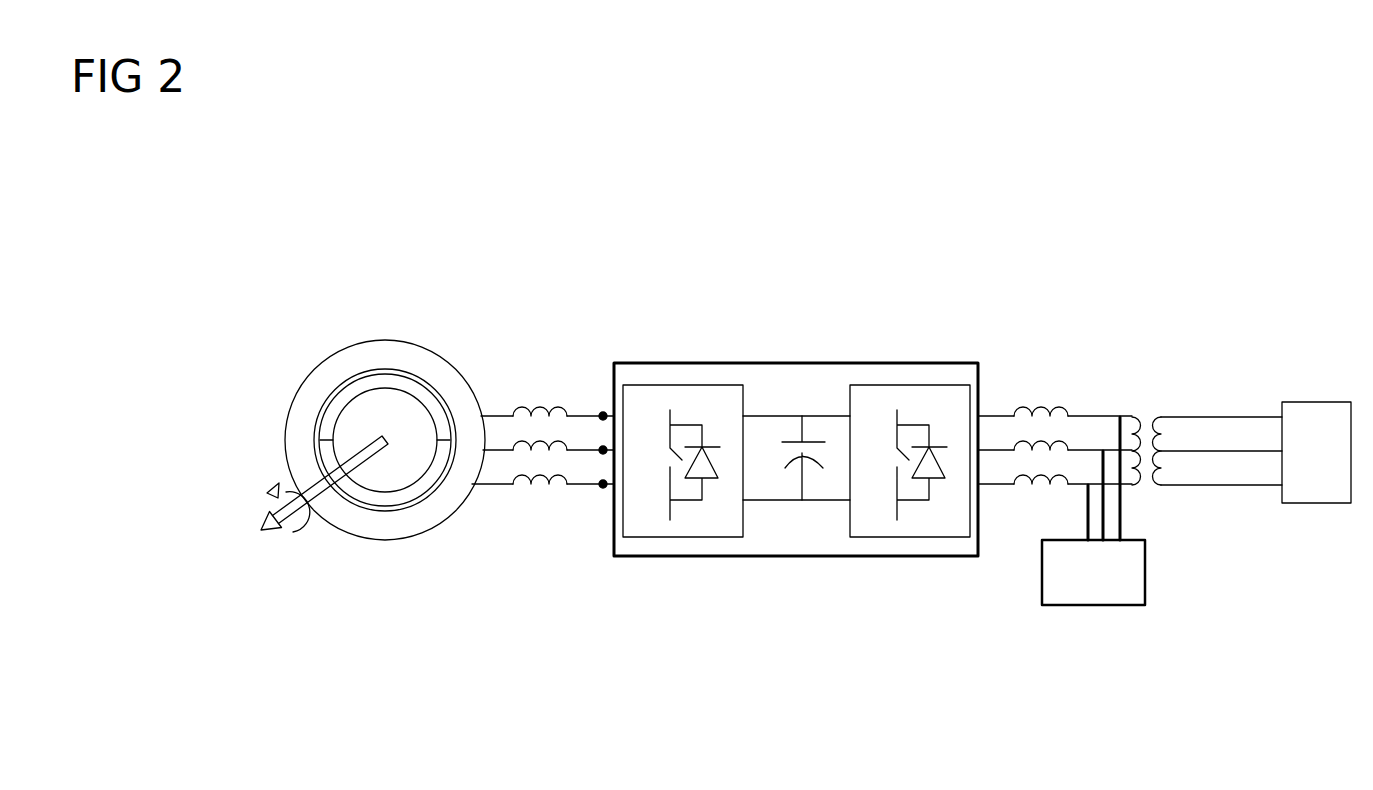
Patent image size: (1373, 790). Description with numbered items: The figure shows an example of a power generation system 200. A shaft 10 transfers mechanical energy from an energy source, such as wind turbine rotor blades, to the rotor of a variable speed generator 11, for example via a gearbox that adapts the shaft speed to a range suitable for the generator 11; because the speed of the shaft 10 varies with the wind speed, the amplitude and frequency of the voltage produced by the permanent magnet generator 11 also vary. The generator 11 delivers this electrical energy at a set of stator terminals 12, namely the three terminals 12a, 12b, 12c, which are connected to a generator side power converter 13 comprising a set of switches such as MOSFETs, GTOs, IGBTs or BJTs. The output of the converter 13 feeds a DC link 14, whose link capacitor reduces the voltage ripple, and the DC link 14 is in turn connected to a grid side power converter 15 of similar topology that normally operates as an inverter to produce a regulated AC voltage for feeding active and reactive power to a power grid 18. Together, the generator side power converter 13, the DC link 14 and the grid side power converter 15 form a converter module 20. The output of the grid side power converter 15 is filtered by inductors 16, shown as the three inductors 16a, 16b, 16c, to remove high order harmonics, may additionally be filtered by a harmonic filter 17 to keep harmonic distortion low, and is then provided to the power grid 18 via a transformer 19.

The shaft 10 is at (270, 535).
The variable speed generator 11 is at (316, 362).
The stator terminals 12 is at (602, 482).
The stator terminal 12a is at (540, 411).
The stator terminal 12b is at (540, 445).
The stator terminal 12c is at (540, 479).
The generator side power converter 13 is at (697, 397).
The DC link 14 is at (802, 417).
The grid side power converter 15 is at (918, 402).
The inductors 16 is at (1058, 480).
The inductor 16a is at (1041, 411).
The inductor 16b is at (1041, 445).
The inductor 16c is at (1041, 479).
The harmonic filter 17 is at (1075, 606).
The power grid 18 is at (1320, 417).
The transformer 19 is at (1143, 427).
The converter module 20 is at (860, 556).
The power generation system 200 is at (1222, 200).